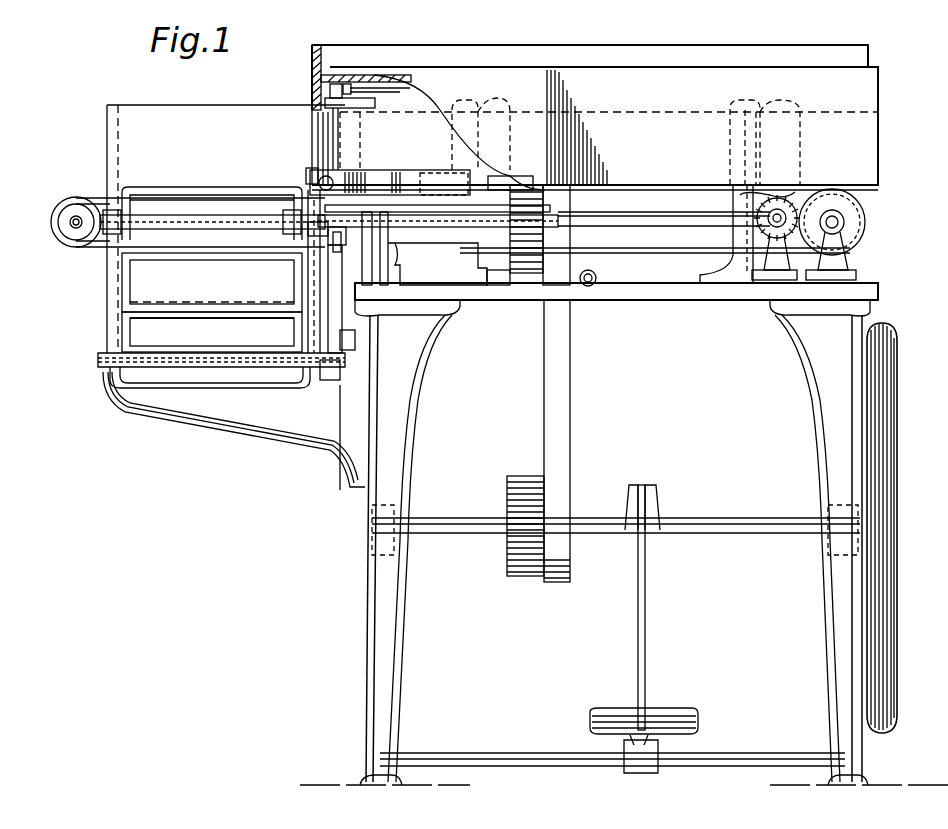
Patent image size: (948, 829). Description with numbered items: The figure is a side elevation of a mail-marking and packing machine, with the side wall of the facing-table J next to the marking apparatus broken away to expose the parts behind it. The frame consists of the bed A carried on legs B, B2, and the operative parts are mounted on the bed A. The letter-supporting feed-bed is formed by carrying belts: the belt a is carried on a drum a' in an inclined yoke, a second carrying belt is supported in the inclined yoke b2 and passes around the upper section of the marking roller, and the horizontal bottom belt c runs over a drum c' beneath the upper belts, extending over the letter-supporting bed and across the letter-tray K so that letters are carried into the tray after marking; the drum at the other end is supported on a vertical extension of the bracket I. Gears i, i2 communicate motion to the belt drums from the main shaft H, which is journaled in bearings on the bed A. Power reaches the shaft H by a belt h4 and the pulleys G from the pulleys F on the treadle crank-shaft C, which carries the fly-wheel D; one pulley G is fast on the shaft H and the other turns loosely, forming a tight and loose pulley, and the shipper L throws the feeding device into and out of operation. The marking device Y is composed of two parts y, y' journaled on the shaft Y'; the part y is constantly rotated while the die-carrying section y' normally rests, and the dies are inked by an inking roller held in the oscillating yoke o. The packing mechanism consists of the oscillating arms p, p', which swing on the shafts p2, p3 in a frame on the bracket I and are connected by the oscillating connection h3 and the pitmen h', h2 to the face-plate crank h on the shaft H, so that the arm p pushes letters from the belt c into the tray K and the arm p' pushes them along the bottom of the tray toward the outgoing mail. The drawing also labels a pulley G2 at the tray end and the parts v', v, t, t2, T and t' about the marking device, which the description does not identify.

The facing-table J is at (688, 52).
The carrying-belt a is at (595, 128).
The drum a' is at (643, 141).
The shaft Y' is at (303, 77).
The hatched bar v' is at (366, 63).
The slide bar v is at (381, 97).
The block t is at (330, 57).
The block t2 is at (347, 80).
The cord/lever T is at (355, 86).
The plate t' is at (350, 134).
The constantly-rotating section y is at (307, 147).
The marking device Y is at (299, 161).
The die-carrying section y' is at (287, 175).
The oscillating yoke o is at (370, 182).
The inclined yoke b2 is at (452, 188).
The face-plate crank h is at (433, 229).
The pitman h' is at (345, 251).
The treadle crank-shaft C is at (424, 248).
The pulleys G is at (512, 236).
The main shaft H is at (664, 211).
The horizontal belt c is at (655, 225).
The shipper L is at (598, 276).
The gears i is at (782, 196).
The drum c' is at (845, 234).
The gear bearing i2 is at (865, 218).
The bed A is at (648, 300).
The legs B is at (395, 472).
The leg B2 is at (830, 468).
The belt h4 is at (570, 366).
The pulleys F is at (525, 478).
The fly-wheel D is at (898, 450).
The letter-tray K is at (226, 229).
The pulley G2 is at (70, 238).
The oscillating arm p is at (212, 197).
The shaft p2 is at (210, 218).
The oscillating arm p' is at (212, 282).
The shaft p3 is at (215, 350).
The pitman h2 is at (345, 299).
The oscillating connection h3 is at (355, 344).
The bracket I is at (234, 431).